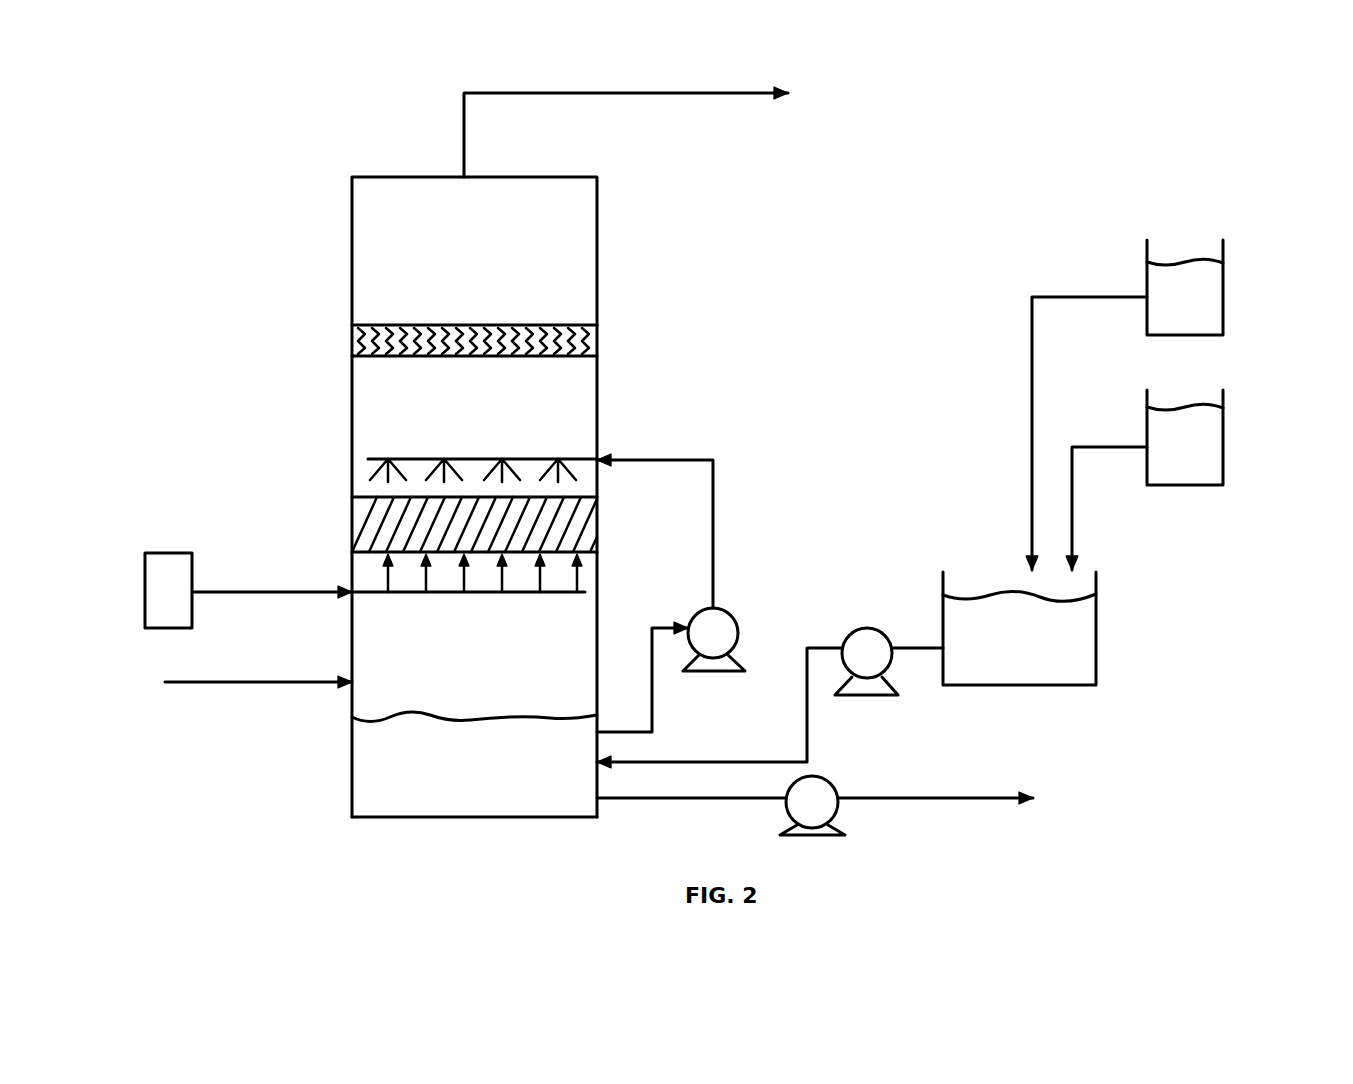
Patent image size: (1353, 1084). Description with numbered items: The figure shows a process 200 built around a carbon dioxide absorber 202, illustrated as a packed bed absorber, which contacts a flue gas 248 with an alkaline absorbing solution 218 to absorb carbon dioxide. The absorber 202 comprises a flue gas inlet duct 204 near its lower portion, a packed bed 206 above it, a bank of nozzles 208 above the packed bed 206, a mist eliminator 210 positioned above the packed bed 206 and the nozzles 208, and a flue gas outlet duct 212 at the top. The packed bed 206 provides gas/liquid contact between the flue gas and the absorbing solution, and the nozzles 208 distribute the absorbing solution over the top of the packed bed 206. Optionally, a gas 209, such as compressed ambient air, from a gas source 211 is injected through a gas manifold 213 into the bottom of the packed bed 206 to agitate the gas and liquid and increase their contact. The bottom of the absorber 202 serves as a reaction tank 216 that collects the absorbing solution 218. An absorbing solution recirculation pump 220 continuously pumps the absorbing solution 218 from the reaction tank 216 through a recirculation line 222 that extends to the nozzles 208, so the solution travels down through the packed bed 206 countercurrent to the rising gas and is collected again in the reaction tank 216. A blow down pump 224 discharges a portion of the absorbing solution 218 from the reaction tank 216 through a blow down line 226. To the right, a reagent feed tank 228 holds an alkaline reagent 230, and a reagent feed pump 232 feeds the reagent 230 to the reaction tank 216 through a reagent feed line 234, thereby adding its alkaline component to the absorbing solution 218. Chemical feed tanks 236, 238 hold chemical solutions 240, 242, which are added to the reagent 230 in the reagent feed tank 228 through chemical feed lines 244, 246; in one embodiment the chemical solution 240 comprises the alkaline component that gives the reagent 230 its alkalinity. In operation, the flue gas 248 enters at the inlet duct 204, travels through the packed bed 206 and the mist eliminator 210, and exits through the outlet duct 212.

The process 200 is at (955, 172).
The carbon dioxide absorber 202 is at (352, 215).
The flue gas inlet duct 204 is at (352, 690).
The packed bed 206 is at (362, 527).
The bank of nozzles 208 is at (407, 458).
The gas 209 is at (280, 588).
The mist eliminator 210 is at (360, 325).
The gas source 211 is at (178, 553).
The flue gas outlet duct 212 is at (464, 177).
The gas manifold 213 is at (380, 594).
The reaction tank 216 is at (352, 800).
The absorbing solution 218 is at (482, 778).
The absorbing solution recirculation pump 220 is at (733, 617).
The recirculation line 222 is at (713, 527).
The blow down pump 224 is at (837, 835).
The blow down line 226 is at (915, 798).
The reagent feed tank 228 is at (1058, 685).
The alkaline reagent 230 is at (1078, 657).
The reagent feed pump 232 is at (838, 685).
The reagent feed line 234 is at (678, 760).
The chemical feed tank 236 is at (1225, 272).
The chemical feed tank 238 is at (1225, 418).
The chemical solution 240 is at (1192, 315).
The chemical solution 242 is at (1192, 463).
The chemical feed line 244 is at (1092, 297).
The chemical feed line 246 is at (1125, 447).
The flue gas 248 is at (628, 93).